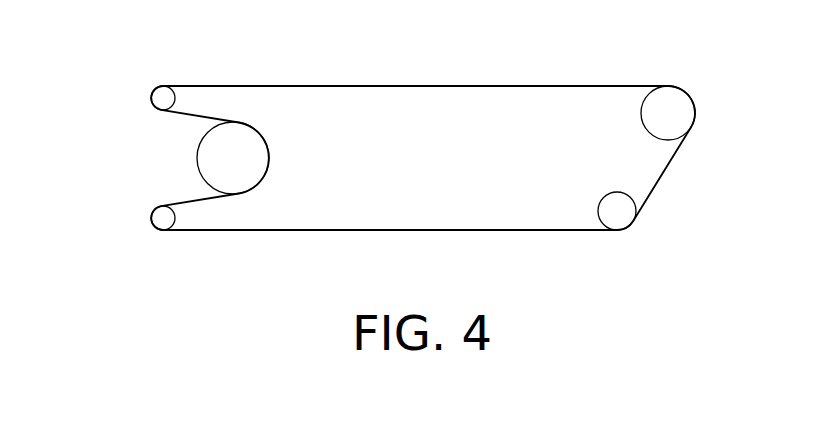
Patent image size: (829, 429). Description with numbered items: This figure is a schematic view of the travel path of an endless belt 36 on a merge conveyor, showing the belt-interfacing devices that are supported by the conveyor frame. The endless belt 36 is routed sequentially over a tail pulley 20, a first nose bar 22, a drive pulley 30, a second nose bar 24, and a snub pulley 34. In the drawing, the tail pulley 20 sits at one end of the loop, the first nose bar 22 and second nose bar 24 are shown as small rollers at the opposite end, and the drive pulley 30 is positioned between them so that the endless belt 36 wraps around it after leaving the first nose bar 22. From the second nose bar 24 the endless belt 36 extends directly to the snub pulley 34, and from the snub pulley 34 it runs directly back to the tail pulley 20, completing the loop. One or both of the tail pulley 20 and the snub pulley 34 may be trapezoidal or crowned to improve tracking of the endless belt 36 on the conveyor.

The tail pulley 20 is at (672, 95).
The first nose bar 22 is at (152, 96).
The second nose bar 24 is at (152, 216).
The drive pulley 30 is at (257, 154).
The snub pulley 34 is at (621, 212).
The endless belt 36 is at (488, 86).